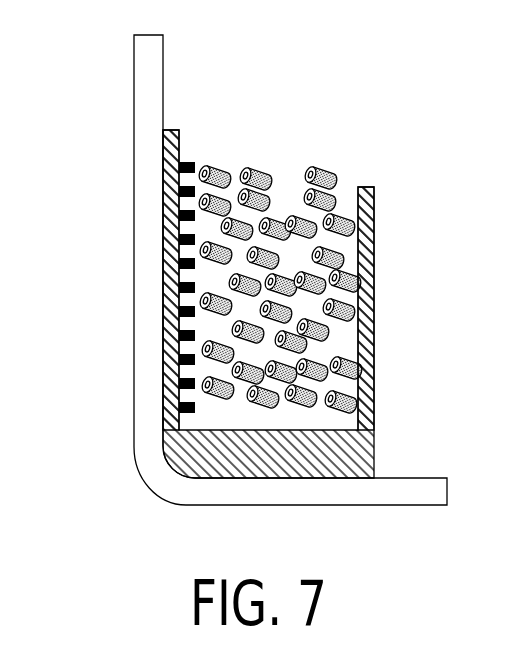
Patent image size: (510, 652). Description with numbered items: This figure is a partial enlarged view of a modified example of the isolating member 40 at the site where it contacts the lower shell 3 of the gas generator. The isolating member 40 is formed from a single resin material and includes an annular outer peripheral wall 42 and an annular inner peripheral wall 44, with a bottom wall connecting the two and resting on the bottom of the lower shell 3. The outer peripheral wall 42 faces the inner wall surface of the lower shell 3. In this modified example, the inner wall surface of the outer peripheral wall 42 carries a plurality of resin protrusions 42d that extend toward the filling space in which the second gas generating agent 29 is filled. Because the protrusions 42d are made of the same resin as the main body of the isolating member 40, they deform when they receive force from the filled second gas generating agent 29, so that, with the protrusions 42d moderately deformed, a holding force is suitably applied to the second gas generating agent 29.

The lower shell 3 is at (133, 442).
The second gas generating agent 29 is at (327, 168).
The isolating member 40 is at (374, 450).
The outer peripheral wall 42 is at (177, 129).
The protrusions 42d is at (188, 161).
The inner peripheral wall 44 is at (375, 231).